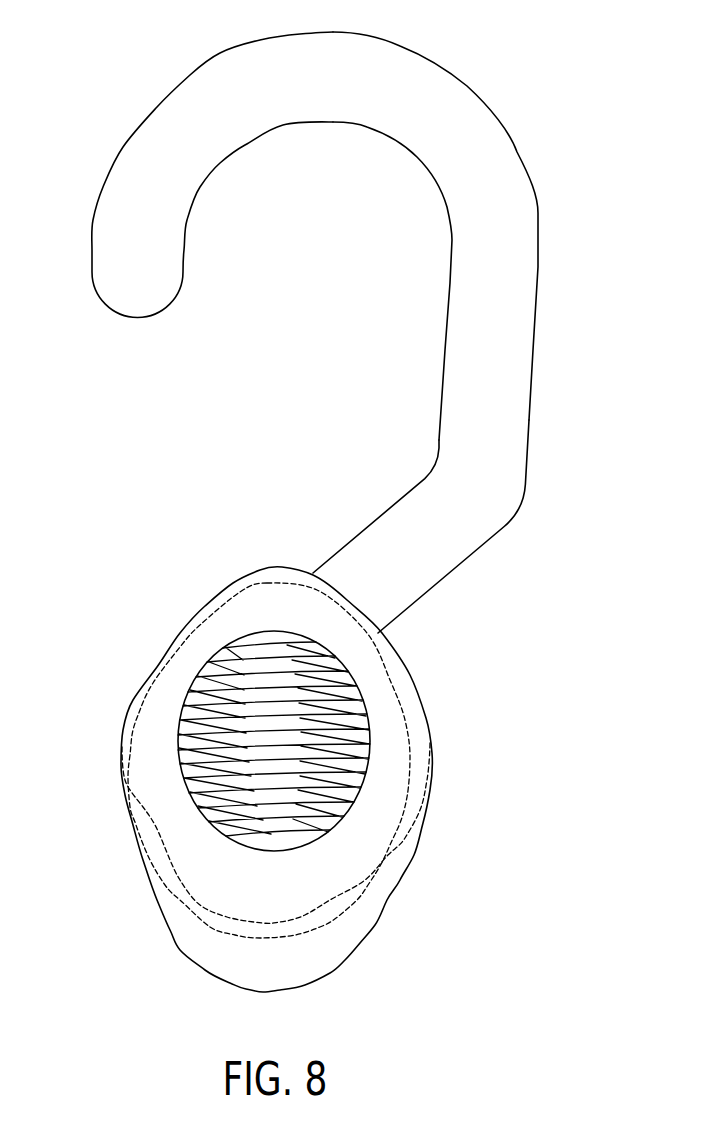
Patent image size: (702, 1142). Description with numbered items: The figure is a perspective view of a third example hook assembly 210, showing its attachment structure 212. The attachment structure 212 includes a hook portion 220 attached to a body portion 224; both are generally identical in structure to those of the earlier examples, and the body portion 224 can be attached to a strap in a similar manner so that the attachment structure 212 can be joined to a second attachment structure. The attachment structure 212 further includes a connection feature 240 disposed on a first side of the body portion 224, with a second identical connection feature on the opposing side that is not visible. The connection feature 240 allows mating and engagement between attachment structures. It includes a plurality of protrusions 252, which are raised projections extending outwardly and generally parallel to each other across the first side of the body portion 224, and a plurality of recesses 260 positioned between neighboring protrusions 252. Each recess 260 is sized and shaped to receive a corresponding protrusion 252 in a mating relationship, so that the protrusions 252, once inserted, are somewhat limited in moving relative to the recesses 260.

The third example hook assembly 210 is at (70, 61).
The attachment structure 212 is at (188, 73).
The hook portion 220 is at (538, 213).
The body portion 224 is at (400, 662).
The connection feature 240 is at (214, 911).
The protrusions 252 is at (328, 815).
The recesses 260 is at (342, 802).